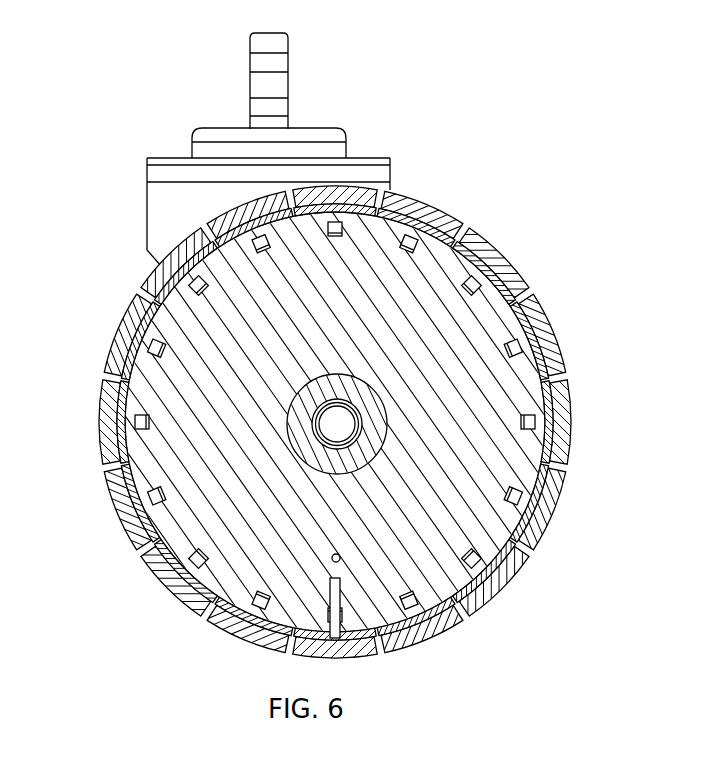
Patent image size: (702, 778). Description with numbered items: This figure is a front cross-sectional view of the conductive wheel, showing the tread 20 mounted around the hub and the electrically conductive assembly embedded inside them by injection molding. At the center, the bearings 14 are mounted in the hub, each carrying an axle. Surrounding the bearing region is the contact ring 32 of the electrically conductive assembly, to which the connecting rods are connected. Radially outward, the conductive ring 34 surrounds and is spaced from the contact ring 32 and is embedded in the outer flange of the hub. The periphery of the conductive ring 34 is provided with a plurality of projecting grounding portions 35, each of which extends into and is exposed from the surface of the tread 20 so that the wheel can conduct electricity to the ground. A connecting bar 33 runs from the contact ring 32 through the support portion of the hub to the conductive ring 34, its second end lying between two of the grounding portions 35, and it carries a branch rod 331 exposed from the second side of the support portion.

The tread 20 is at (355, 422).
The bearings 14 is at (380, 424).
The contact ring 32 is at (360, 446).
The connecting bar 33 is at (417, 637).
The branch rod 331 is at (333, 558).
The conductive ring 34 is at (553, 332).
The grounding portions 35 is at (537, 292).